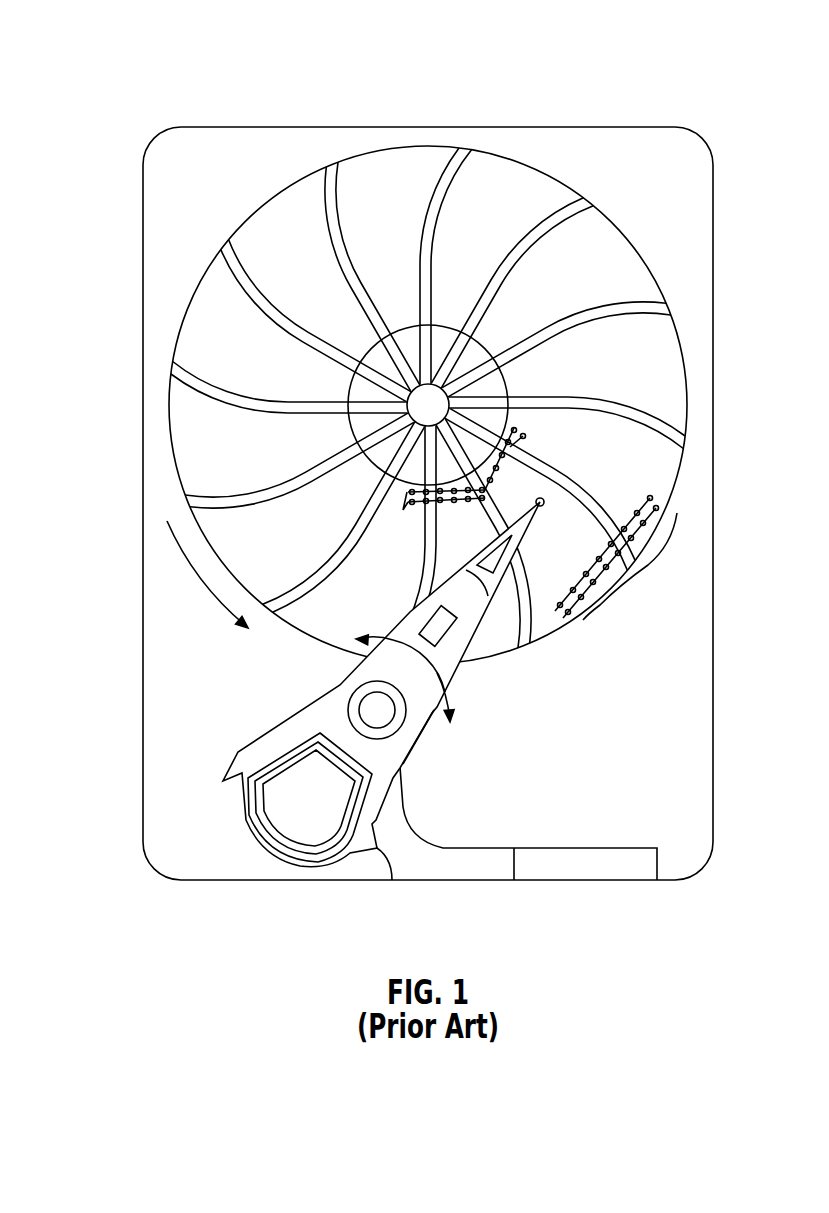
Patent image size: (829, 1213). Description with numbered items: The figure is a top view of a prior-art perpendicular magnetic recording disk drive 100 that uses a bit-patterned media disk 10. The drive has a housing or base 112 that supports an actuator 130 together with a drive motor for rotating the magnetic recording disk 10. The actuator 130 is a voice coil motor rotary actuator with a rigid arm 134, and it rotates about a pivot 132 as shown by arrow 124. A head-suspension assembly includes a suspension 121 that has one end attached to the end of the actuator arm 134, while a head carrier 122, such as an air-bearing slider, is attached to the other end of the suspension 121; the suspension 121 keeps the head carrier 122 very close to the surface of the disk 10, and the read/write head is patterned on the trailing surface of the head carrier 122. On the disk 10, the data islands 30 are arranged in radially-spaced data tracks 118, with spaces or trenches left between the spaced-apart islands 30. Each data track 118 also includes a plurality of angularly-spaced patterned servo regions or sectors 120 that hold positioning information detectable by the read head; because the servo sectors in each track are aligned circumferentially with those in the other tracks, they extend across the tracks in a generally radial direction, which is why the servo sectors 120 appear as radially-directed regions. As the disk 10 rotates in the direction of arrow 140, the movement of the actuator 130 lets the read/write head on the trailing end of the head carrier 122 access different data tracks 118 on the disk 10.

The perpendicular magnetic recording disk drive 100 is at (145, 52).
The housing or base 112 is at (648, 128).
The bit-patterned media disk 10 is at (292, 183).
The servo sectors 120 is at (338, 200).
The data tracks 118 is at (400, 495).
The data islands 30 is at (490, 493).
The arrow indicating disk rotation direction 140 is at (187, 562).
The actuator 130 is at (365, 682).
The suspension 121 is at (476, 568).
The head carrier 122 is at (543, 506).
The pivot 132 is at (370, 708).
The rigid arm 134 is at (408, 630).
The arrow indicating actuator rotation 124 is at (450, 693).